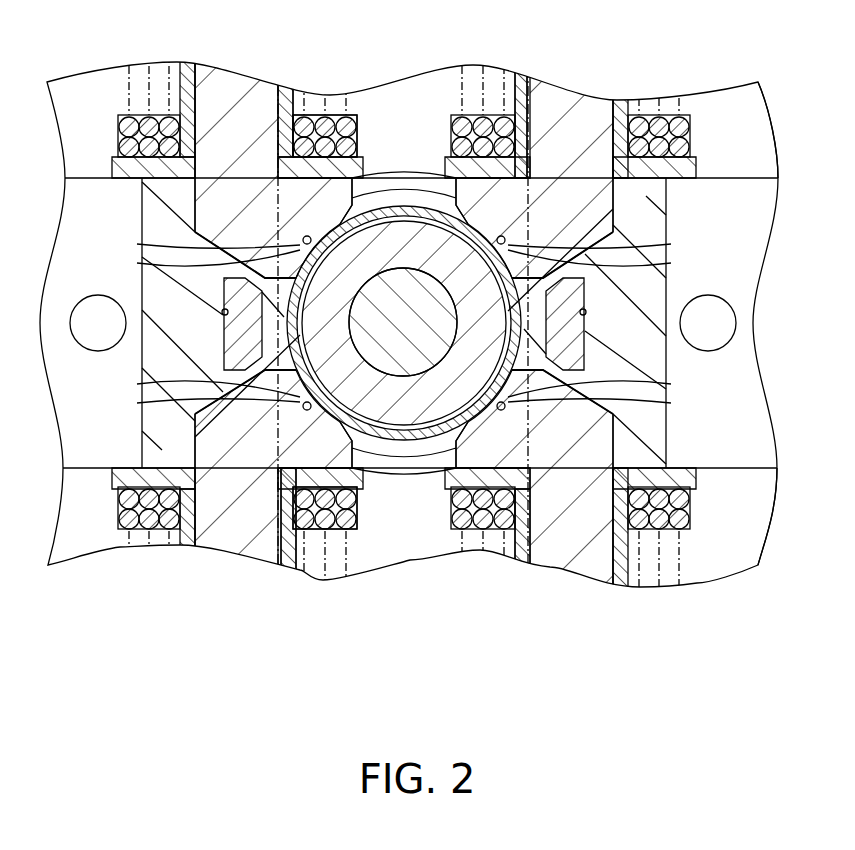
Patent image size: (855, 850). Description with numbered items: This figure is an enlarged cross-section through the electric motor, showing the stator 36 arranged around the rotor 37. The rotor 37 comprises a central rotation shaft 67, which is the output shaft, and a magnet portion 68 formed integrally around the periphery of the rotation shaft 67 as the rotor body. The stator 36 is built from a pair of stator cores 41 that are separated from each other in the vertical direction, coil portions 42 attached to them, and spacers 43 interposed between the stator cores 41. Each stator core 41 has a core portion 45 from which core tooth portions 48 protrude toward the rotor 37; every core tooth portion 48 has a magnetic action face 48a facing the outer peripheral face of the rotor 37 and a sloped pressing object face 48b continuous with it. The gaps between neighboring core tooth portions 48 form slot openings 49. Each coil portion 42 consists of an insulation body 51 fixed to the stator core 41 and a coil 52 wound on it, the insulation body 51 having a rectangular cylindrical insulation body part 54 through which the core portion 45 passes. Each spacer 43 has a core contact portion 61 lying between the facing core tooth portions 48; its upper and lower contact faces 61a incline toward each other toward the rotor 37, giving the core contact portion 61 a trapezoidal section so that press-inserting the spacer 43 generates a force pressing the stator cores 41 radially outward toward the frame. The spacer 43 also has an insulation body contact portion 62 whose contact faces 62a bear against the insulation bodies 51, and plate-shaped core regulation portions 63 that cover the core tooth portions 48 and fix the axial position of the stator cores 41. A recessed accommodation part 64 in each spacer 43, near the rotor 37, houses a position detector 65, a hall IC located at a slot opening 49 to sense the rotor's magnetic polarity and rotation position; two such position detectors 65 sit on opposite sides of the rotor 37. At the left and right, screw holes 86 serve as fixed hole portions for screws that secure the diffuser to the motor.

The stator 36 is at (587, 94).
The rotor 37 is at (303, 522).
The stator core 41 is at (191, 90).
The coil portion 42 is at (695, 103).
The spacer 43 is at (150, 472).
The core portion 45 is at (226, 85).
The core tooth portion 48 is at (210, 215).
The magnetic action face 48a is at (666, 405).
The pressing object face 48b is at (608, 445).
The slot opening 49 is at (408, 192).
The insulation body 51 is at (293, 105).
The coil 52 is at (345, 125).
The insulation body part 54 is at (112, 170).
The core contact portion 61 is at (217, 245).
The contact face 61a is at (281, 100).
The insulation body contact portion 62 is at (153, 223).
The contact face 62a is at (148, 165).
The core regulation portion 63 is at (224, 182).
The accommodation part 64 is at (222, 312).
The position detector 65 is at (232, 357).
The rotation shaft 67 is at (408, 362).
The magnet portion 68 is at (480, 522).
The screw hole 86 is at (88, 302).